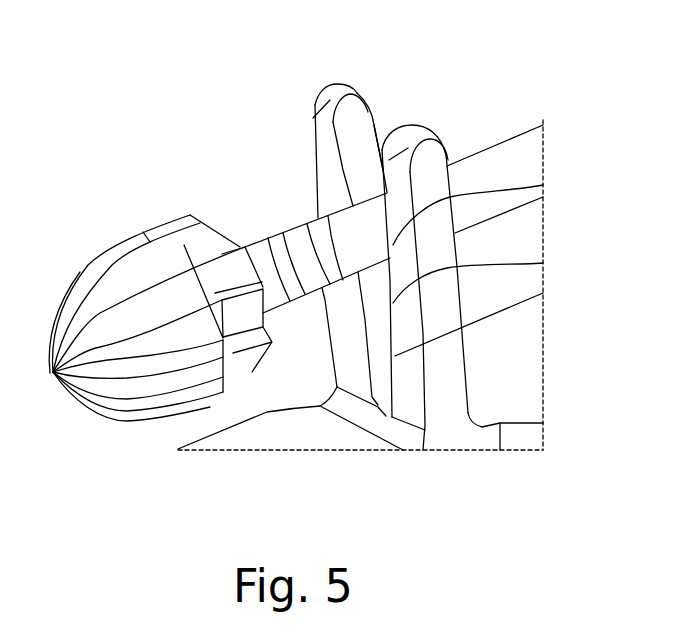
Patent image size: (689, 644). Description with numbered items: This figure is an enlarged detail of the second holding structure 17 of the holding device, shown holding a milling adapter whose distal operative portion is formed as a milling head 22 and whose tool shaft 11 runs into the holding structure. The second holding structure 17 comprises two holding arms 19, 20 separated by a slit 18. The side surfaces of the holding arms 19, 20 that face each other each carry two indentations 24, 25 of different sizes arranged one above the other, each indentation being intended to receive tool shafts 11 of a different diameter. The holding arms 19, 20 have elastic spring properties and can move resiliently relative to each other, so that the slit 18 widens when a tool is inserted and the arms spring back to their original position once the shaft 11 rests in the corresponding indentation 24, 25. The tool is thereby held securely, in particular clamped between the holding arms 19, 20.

The tool shaft 11 is at (492, 145).
The second holding structure 17 is at (461, 453).
The slit 18 is at (383, 130).
The holding arm 19 is at (333, 100).
The holding arm 20 is at (410, 140).
The milling head 22 is at (112, 275).
The indentation 24 is at (543, 263).
The indentation 25 is at (543, 185).